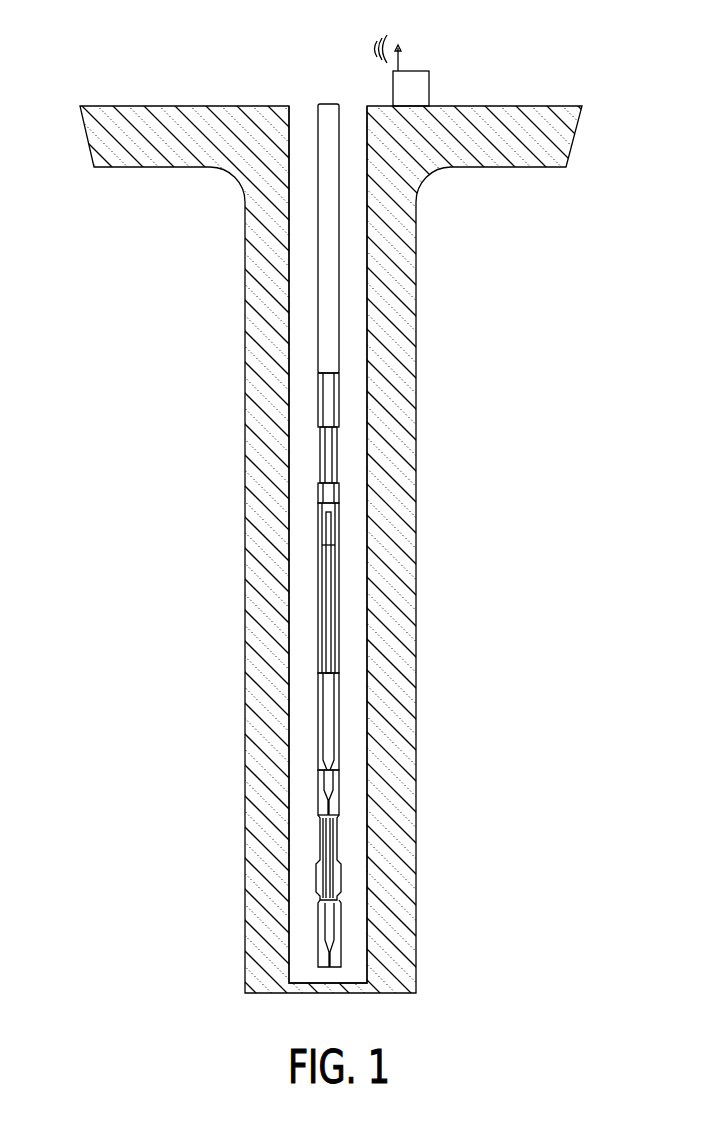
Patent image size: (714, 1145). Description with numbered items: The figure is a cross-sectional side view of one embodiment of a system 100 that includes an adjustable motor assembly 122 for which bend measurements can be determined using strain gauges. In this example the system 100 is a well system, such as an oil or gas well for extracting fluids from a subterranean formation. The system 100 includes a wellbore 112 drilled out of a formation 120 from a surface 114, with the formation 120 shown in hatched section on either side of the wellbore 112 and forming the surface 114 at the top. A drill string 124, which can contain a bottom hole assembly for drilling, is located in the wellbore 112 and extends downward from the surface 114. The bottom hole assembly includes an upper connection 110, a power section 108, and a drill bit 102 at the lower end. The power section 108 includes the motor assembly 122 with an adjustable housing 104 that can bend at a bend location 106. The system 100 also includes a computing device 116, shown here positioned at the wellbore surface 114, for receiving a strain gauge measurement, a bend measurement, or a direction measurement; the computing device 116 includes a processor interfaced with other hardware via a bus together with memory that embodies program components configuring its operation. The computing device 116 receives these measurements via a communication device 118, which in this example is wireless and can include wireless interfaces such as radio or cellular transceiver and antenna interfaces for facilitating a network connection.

The system 100 is at (113, 947).
The drill bit 102 is at (343, 965).
The adjustable housing 104 is at (340, 767).
The bend location 106 is at (340, 734).
The power section 108 is at (345, 597).
The upper connection 110 is at (345, 380).
The wellbore 112 is at (311, 316).
The surface 114 is at (232, 105).
The computing device 116 is at (437, 86).
The communication device 118 is at (359, 41).
The formation 120 is at (444, 291).
The motor assembly 122 is at (345, 717).
The drill string 124 is at (345, 246).